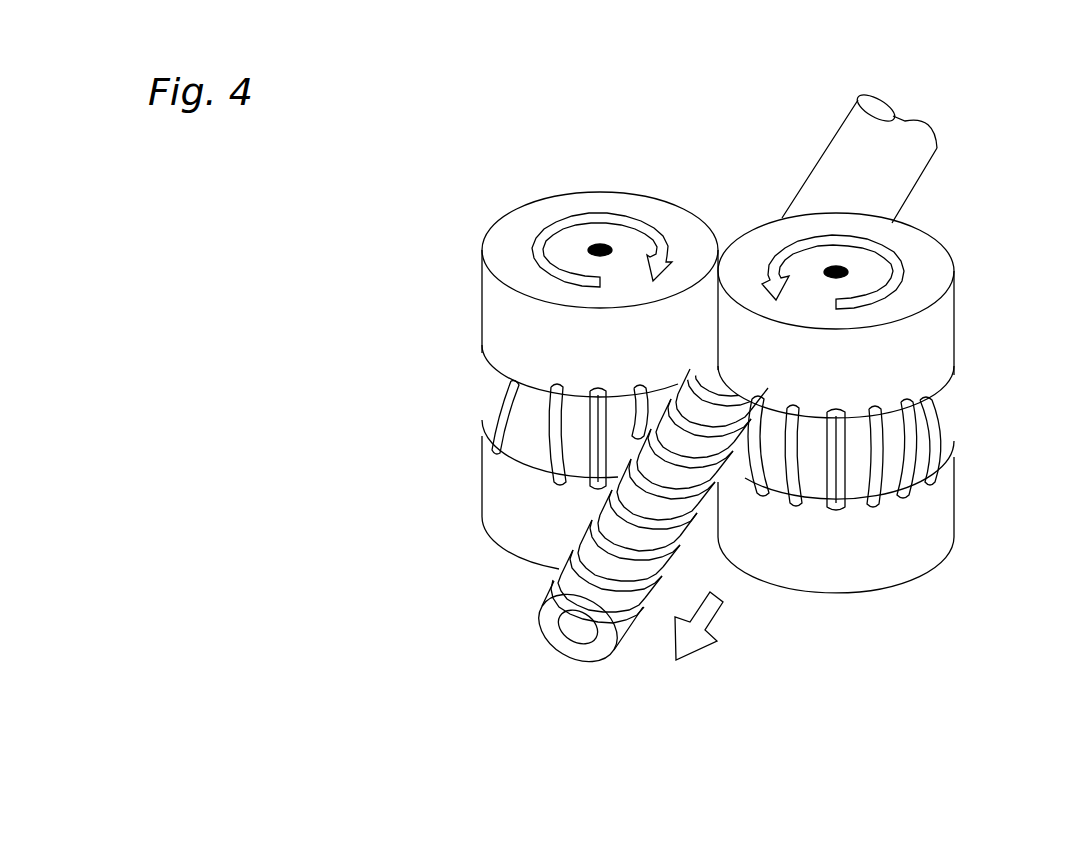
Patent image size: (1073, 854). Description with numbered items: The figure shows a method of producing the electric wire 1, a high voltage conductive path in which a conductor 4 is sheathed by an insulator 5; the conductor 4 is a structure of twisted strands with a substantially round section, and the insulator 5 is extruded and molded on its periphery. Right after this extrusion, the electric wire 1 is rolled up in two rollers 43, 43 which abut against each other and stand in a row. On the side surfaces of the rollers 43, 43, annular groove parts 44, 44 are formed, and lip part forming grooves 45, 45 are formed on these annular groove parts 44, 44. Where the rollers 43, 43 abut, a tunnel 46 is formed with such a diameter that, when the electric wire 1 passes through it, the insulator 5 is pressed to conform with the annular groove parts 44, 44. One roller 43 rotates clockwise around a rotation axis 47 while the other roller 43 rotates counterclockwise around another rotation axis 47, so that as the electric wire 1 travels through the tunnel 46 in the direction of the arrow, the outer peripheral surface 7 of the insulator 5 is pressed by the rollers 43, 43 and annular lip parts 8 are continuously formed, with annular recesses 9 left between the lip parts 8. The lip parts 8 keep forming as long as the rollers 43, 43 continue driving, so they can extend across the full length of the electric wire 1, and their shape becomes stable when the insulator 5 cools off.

The electric wire 1 is at (608, 434).
The conductor 4 is at (577, 635).
The insulator 5 is at (597, 655).
The outer peripheral surface 7 is at (845, 148).
The lip part 8 is at (590, 533).
The annular recess 9 is at (580, 553).
The roller 43 is at (503, 485).
The annular groove part 44 is at (512, 392).
The lip part forming groove 45 is at (560, 422).
The tunnel 46 is at (712, 380).
The rotation axis 47 is at (603, 247).